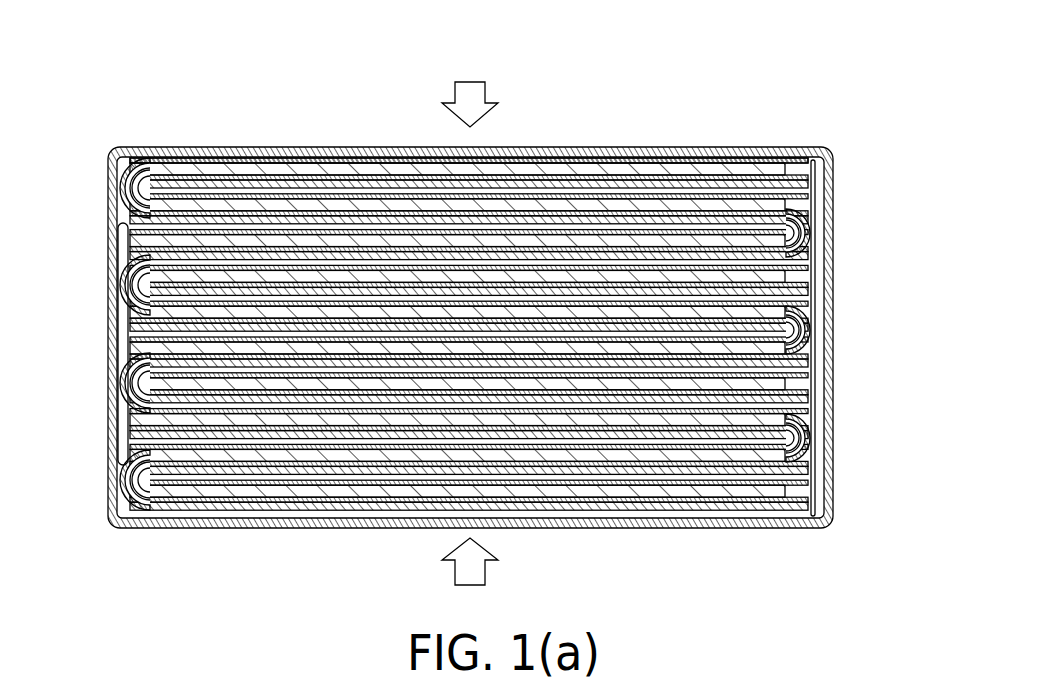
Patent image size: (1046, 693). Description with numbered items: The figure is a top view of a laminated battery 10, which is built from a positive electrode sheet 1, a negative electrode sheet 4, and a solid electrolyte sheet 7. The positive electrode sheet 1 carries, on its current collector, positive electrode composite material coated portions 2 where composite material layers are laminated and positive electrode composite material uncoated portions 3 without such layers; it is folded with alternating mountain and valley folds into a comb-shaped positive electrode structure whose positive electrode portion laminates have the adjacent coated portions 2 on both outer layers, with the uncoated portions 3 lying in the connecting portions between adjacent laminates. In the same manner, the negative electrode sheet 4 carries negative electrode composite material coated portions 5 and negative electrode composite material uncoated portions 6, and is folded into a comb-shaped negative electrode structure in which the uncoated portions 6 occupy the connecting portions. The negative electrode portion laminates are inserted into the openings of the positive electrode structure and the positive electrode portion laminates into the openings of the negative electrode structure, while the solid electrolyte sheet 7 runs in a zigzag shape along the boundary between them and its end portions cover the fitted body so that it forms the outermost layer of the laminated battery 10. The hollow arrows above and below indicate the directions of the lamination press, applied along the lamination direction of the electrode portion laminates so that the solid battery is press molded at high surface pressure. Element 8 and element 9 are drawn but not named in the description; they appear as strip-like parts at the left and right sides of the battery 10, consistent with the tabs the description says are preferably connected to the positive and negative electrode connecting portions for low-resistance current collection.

The positive electrode sheet 1 is at (807, 428).
The positive electrode composite material coated portions 2 is at (600, 225).
The positive electrode composite material uncoated portions 3 is at (137, 215).
The negative electrode sheet 4 is at (805, 495).
The negative electrode composite material coated portions 5 is at (735, 160).
The negative electrode composite material uncoated portions 6 is at (803, 365).
The solid electrolyte sheet 7 is at (838, 203).
The negative electrode lead 8 is at (118, 278).
The positive electrode lead 9 is at (816, 270).
The laminated battery 10 is at (486, 297).